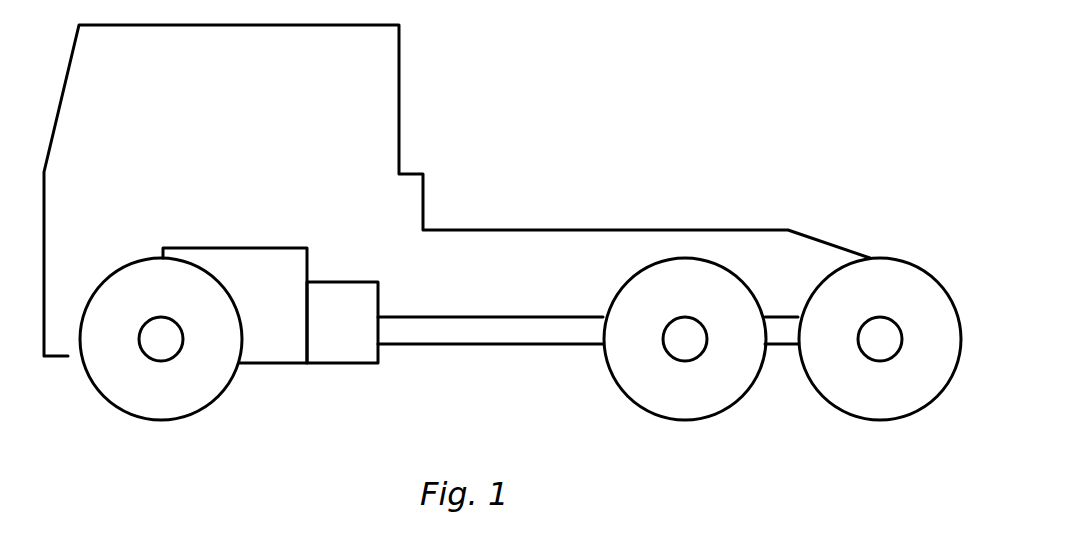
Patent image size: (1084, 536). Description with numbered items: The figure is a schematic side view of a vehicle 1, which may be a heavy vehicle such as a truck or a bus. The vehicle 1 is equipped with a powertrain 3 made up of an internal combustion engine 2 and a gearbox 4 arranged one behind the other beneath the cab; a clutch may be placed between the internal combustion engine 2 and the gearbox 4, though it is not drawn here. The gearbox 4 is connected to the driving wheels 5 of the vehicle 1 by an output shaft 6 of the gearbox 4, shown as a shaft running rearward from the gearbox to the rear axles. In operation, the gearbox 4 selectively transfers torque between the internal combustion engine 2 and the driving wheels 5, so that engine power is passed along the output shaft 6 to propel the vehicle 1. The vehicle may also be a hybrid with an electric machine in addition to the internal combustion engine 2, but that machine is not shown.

The vehicle 1 is at (502, 88).
The internal combustion engine 2 is at (187, 247).
The powertrain 3 is at (275, 324).
The gearbox 4 is at (345, 363).
The driving wheels 5 is at (730, 407).
The output shaft 6 is at (433, 333).